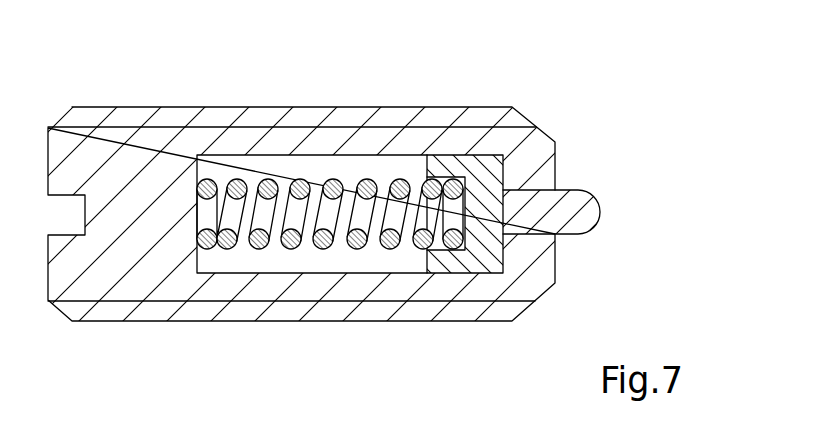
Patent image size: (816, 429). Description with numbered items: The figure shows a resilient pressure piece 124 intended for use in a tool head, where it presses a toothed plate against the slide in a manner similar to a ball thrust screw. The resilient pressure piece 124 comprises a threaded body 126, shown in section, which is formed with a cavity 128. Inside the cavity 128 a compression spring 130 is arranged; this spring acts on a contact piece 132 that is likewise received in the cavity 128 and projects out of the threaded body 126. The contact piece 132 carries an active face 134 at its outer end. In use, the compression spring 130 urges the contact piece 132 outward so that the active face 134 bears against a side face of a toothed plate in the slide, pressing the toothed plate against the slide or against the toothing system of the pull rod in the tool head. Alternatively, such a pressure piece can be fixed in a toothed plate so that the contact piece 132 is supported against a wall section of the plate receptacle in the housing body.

The resilient pressure piece 124 is at (397, 201).
The threaded body 126 is at (232, 322).
The cavity 128 is at (330, 270).
The compression spring 130 is at (355, 249).
The contact piece 132 is at (491, 220).
The active face 134 is at (598, 213).